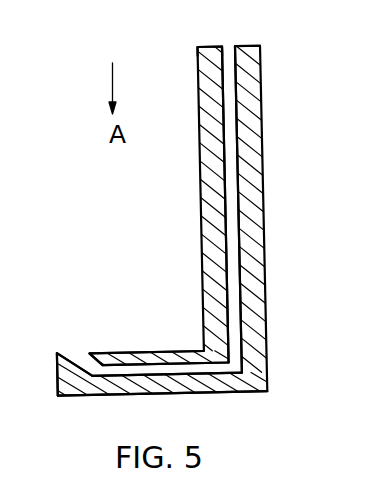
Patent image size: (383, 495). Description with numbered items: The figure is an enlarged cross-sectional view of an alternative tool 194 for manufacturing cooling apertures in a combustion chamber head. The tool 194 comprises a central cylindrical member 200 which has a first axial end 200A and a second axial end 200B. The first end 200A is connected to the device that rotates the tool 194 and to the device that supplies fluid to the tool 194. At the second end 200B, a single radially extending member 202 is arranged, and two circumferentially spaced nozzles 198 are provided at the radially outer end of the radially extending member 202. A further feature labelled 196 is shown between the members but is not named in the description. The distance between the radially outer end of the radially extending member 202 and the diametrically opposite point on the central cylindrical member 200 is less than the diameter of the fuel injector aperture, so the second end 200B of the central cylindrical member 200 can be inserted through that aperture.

The tool 194 is at (175, 231).
The gap between members 196 is at (232, 172).
The nozzles 198 is at (72, 356).
The central cylindrical member 200 is at (158, 190).
The first axial end 200A is at (198, 54).
The second axial end 200B is at (204, 341).
The radially extending member 202 is at (147, 387).